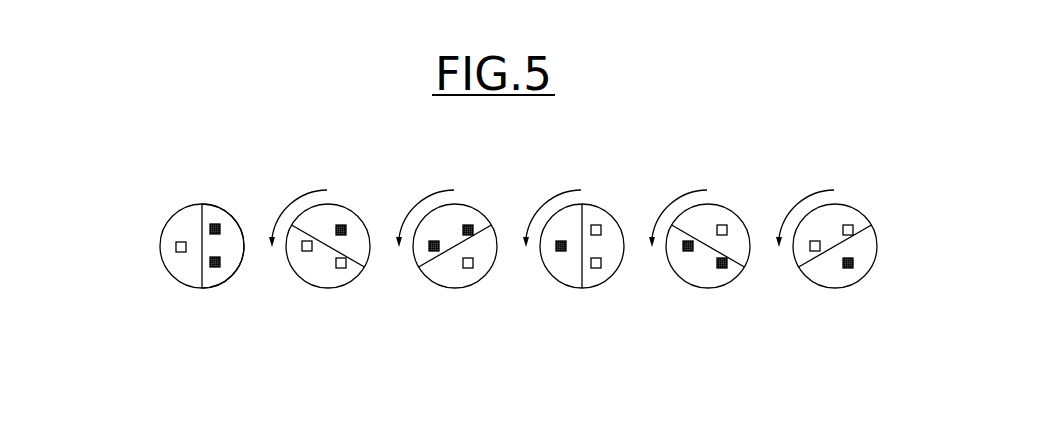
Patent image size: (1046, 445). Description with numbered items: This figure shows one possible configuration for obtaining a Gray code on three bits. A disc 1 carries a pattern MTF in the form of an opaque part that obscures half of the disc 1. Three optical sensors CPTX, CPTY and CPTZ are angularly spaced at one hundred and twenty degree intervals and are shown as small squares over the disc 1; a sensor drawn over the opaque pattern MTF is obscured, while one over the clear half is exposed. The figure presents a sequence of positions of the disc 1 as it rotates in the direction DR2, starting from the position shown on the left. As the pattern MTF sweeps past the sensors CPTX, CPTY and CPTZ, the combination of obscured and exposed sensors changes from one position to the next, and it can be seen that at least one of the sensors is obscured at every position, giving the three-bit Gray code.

The disc 1 is at (159, 247).
The optical sensor CPTX is at (215, 268).
The optical sensor CPTY is at (176, 247).
The optical sensor CPTZ is at (215, 223).
The pattern MTF is at (207, 250).
The direction of rotation DR2 is at (544, 210).